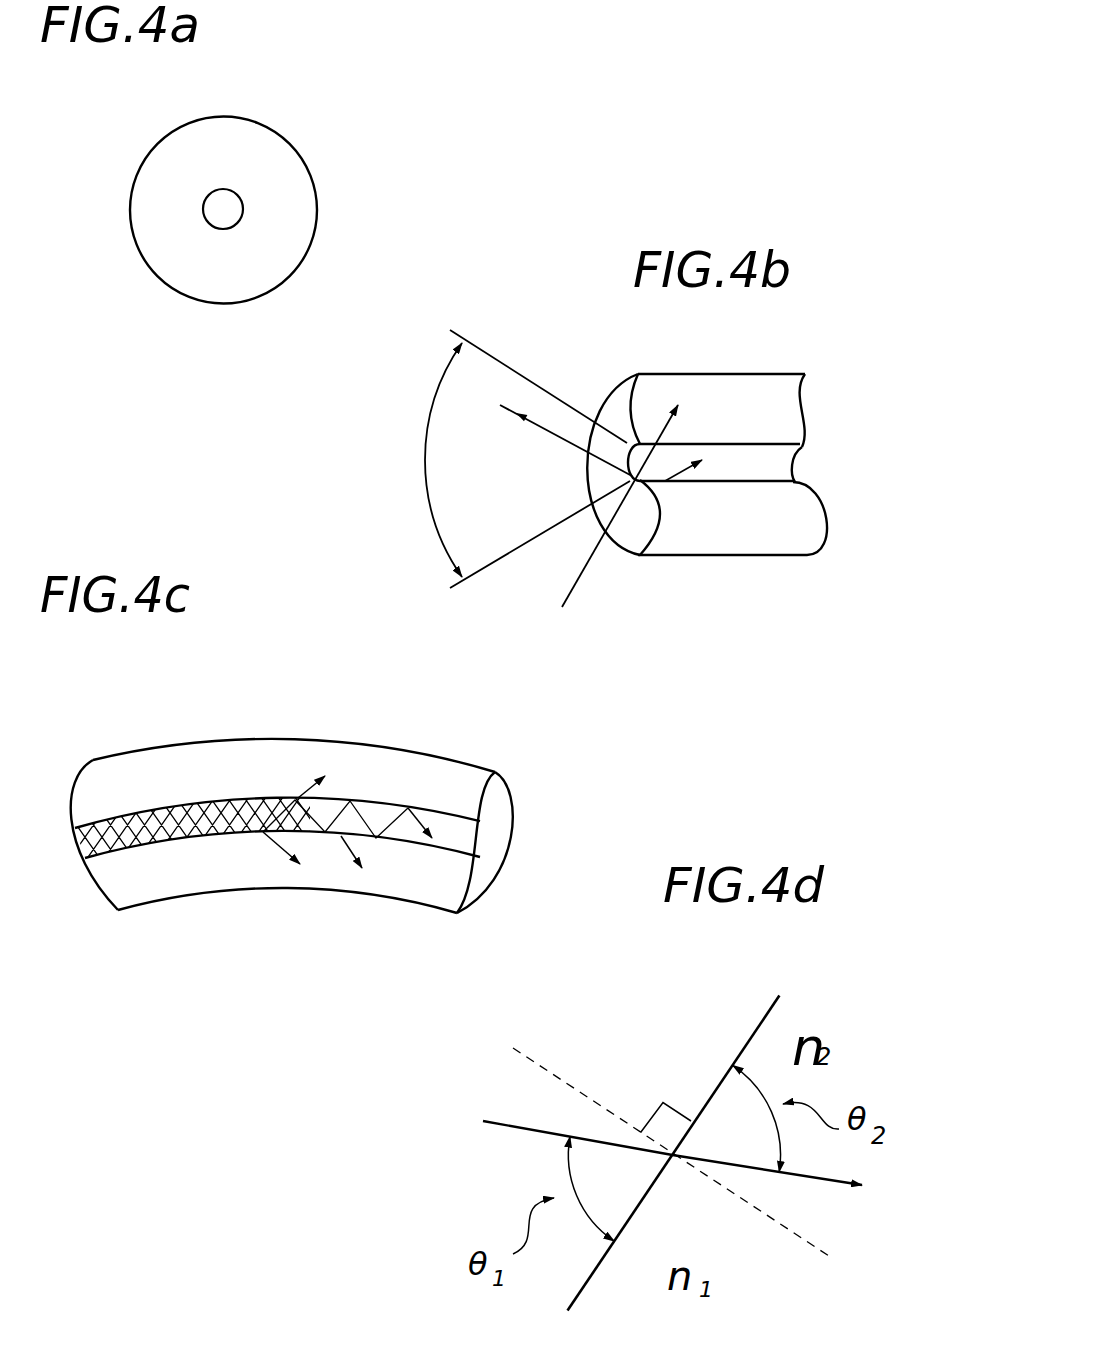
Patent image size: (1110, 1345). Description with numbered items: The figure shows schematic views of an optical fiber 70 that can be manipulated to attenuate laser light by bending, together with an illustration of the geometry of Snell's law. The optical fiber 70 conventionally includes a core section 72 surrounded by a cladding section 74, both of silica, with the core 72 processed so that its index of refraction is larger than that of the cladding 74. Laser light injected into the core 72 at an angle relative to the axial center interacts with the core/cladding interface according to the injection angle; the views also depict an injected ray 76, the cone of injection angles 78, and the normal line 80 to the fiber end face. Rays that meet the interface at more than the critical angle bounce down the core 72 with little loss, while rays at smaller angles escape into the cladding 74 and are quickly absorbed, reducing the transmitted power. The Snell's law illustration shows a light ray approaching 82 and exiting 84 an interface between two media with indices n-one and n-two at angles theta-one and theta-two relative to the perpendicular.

In FIG. 4A, the optical fiber 70 is at (103, 183).
In FIG. 4A, the core section 72 is at (230, 205).
In FIG. 4B, the core section 72 is at (757, 463).
In FIG. 4C, the core section 72 is at (160, 805).
In FIG. 4A, the cladding section 74 is at (184, 221).
In FIG. 4B, the cladding section 74 is at (783, 533).
In FIG. 4C, the cladding section 74 is at (172, 873).
In FIG. 4B, the light ray 76 is at (557, 437).
In FIG. 4B, the acceptance angle cone 78 is at (410, 440).
In FIG. 4B, the normal line to fiber end face 80 is at (577, 580).
In FIG. 4D, the light ray approaching interface 82 is at (530, 1128).
In FIG. 4D, the light ray exiting interface 84 is at (817, 1179).